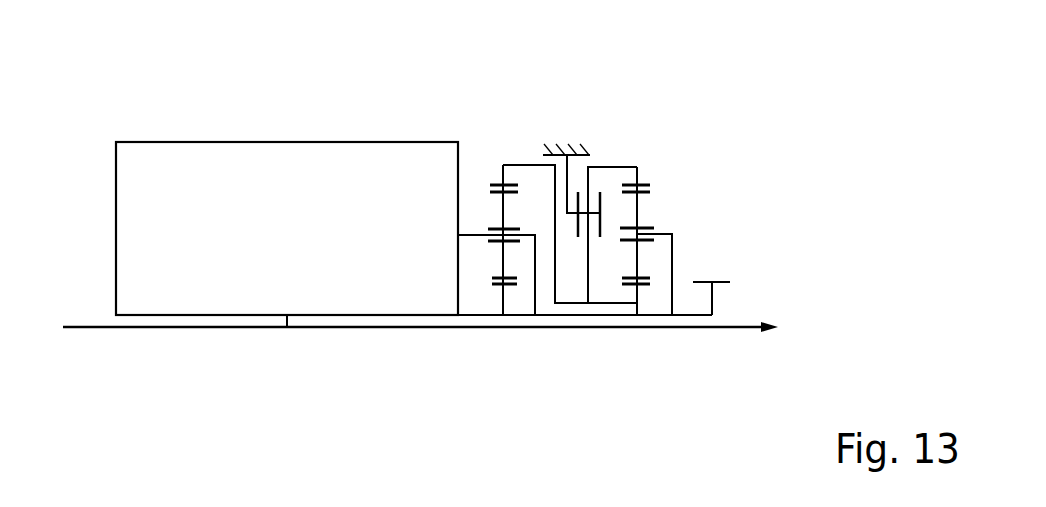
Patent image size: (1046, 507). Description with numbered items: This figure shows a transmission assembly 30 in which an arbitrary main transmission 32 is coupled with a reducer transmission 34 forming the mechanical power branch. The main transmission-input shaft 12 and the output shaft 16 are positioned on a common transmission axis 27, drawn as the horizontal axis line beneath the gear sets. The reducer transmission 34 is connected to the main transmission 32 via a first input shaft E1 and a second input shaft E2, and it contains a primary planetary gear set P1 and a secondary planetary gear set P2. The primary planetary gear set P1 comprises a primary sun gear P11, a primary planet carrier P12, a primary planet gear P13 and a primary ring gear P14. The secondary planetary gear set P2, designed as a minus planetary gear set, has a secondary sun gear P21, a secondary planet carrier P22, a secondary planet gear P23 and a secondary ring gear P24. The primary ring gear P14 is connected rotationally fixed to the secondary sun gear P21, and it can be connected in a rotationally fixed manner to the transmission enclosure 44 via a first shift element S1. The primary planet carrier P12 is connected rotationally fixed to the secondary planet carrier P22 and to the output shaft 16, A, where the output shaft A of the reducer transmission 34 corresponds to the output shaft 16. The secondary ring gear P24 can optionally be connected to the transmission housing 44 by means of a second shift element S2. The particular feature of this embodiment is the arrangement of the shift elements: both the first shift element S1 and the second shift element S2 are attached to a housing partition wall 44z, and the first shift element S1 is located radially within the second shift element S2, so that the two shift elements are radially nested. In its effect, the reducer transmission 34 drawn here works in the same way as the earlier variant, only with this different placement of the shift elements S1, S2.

The main transmission 32 is at (164, 176).
The main transmission-input shaft 12 is at (411, 394).
The transmission axis 27 is at (104, 329).
The first input shaft E1 is at (463, 316).
The second input shaft E2 is at (470, 237).
The primary planetary gear set P1 is at (503, 340).
The primary sun gear P11 is at (505, 302).
The primary planet carrier P12 is at (474, 233).
The primary planet gear P13 is at (502, 263).
The primary ring gear P14 is at (502, 173).
The transmission enclosure 44 is at (566, 152).
The housing partition wall 44z is at (560, 167).
The first shift element S1 is at (600, 253).
The second shift element S2 is at (599, 182).
The secondary planetary gear set P2 is at (636, 340).
The secondary sun gear P21 is at (657, 305).
The secondary planet carrier P22 is at (672, 252).
The secondary planet gear P23 is at (640, 210).
The secondary ring gear P24 is at (638, 182).
The reducer transmission 34 is at (695, 114).
The transmission assembly 30 is at (742, 164).
The output shaft 16 is at (793, 281).
The output shaft of the reducer transmission A is at (718, 282).